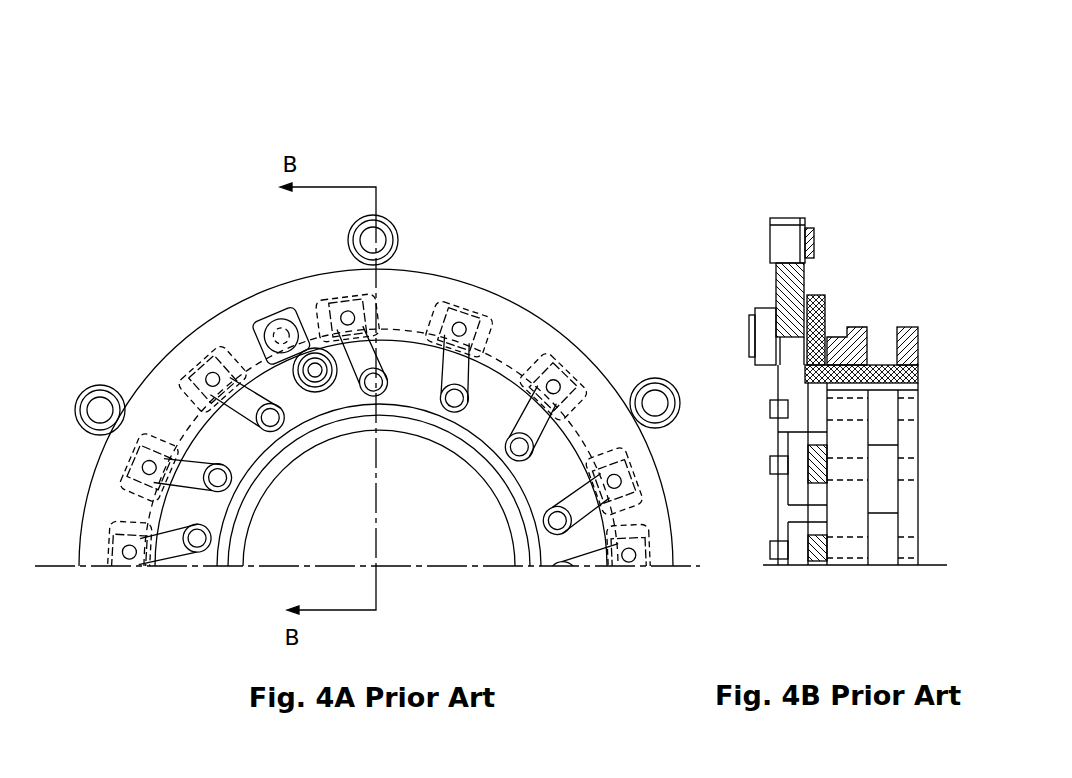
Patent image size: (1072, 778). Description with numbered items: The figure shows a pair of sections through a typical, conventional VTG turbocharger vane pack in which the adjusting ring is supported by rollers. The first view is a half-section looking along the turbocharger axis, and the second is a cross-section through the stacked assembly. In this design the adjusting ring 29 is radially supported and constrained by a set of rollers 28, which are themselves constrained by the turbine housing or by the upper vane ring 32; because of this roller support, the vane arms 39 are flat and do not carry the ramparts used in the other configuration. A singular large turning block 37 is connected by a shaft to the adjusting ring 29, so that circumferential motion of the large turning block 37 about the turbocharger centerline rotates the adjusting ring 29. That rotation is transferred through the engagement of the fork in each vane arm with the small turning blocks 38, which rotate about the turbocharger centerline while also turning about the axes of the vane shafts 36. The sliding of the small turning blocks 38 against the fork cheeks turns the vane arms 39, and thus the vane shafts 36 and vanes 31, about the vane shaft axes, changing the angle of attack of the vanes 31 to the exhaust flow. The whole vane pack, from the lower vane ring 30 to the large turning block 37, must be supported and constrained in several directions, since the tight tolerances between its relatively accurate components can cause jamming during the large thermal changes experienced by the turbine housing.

In FIG. 4A, the rollers 28 is at (398, 238).
In FIG. 4B, the rollers 28 is at (787, 218).
In FIG. 4A, the adjusting ring 29 is at (188, 370).
In FIG. 4B, the adjusting ring 29 is at (775, 277).
In FIG. 4B, the lower vane ring 30 is at (900, 345).
In FIG. 4B, the vanes 31 is at (880, 367).
In FIG. 4B, the upper vane ring 32 is at (843, 337).
In FIG. 4B, the vane shafts 36 is at (918, 373).
In FIG. 4A, the large turning block 37 is at (262, 365).
In FIG. 4B, the large turning block 37 is at (757, 363).
In FIG. 4A, the small turning blocks 38 is at (298, 312).
In FIG. 4B, the vane arms 39 is at (823, 293).